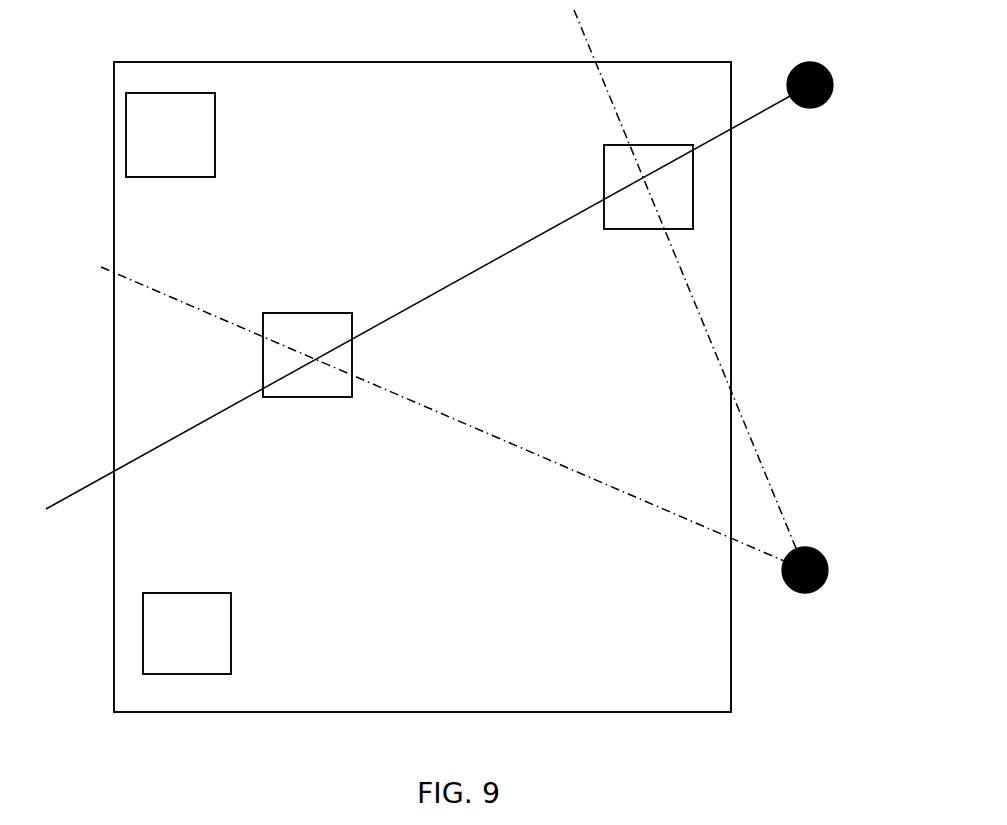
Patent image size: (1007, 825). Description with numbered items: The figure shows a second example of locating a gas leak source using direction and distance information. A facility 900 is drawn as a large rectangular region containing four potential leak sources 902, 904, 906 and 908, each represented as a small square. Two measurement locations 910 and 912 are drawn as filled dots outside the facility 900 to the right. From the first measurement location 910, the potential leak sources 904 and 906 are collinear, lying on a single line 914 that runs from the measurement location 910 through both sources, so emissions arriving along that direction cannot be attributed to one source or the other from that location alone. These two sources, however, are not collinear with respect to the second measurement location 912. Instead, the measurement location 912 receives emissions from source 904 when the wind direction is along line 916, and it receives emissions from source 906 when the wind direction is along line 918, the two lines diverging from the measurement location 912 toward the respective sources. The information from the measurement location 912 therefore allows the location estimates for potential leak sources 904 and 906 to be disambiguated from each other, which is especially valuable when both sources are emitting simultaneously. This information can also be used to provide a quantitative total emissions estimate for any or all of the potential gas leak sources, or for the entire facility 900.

The facility 900 is at (292, 61).
The potential leak source 902 is at (215, 137).
The potential leak source 904 is at (604, 164).
The potential leak source 906 is at (352, 355).
The potential leak source 908 is at (231, 645).
The measurement location 910 is at (808, 108).
The measurement location 912 is at (805, 593).
The line 914 is at (497, 258).
The line 916 is at (708, 332).
The line 918 is at (595, 480).